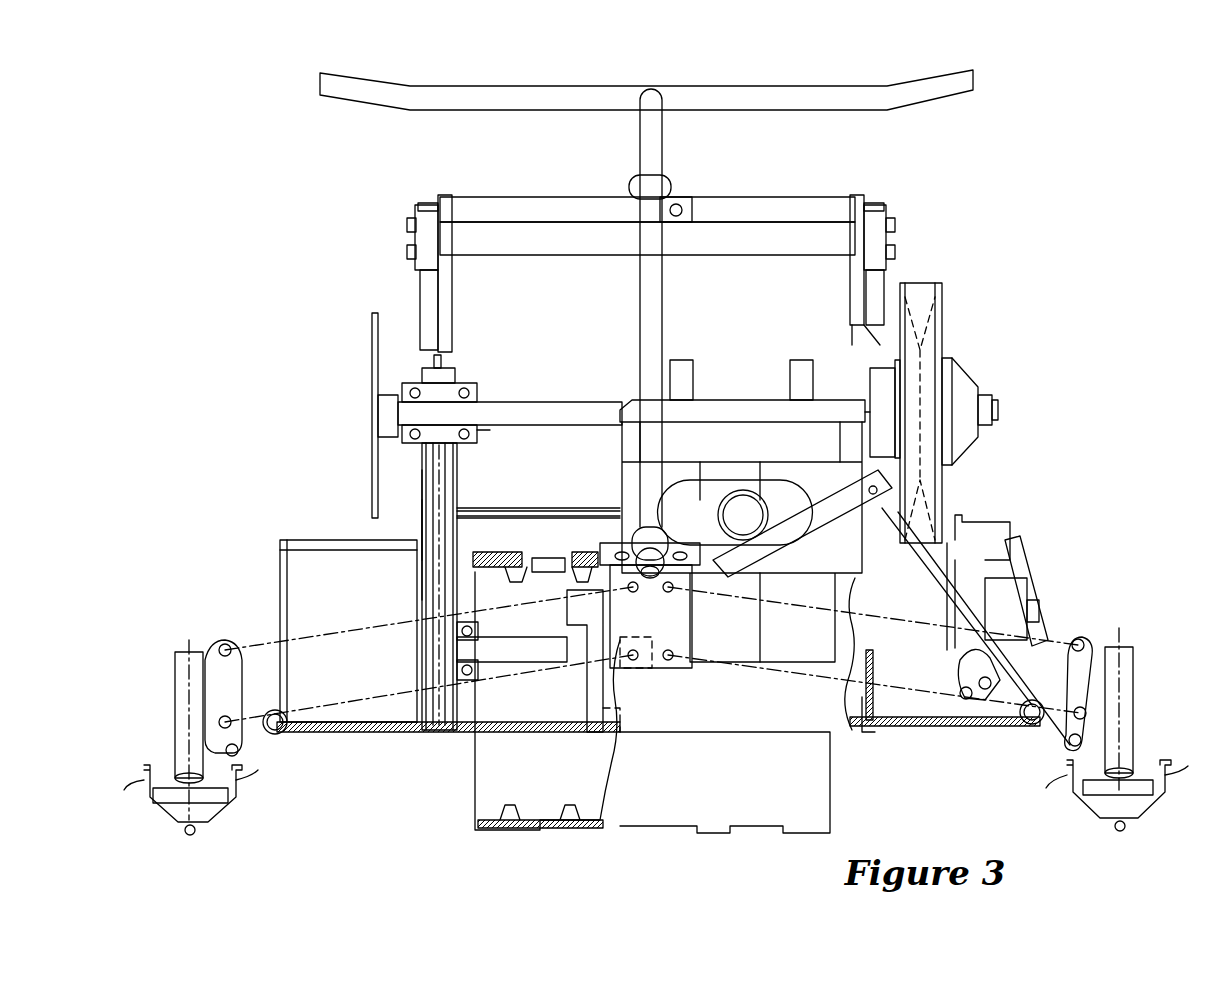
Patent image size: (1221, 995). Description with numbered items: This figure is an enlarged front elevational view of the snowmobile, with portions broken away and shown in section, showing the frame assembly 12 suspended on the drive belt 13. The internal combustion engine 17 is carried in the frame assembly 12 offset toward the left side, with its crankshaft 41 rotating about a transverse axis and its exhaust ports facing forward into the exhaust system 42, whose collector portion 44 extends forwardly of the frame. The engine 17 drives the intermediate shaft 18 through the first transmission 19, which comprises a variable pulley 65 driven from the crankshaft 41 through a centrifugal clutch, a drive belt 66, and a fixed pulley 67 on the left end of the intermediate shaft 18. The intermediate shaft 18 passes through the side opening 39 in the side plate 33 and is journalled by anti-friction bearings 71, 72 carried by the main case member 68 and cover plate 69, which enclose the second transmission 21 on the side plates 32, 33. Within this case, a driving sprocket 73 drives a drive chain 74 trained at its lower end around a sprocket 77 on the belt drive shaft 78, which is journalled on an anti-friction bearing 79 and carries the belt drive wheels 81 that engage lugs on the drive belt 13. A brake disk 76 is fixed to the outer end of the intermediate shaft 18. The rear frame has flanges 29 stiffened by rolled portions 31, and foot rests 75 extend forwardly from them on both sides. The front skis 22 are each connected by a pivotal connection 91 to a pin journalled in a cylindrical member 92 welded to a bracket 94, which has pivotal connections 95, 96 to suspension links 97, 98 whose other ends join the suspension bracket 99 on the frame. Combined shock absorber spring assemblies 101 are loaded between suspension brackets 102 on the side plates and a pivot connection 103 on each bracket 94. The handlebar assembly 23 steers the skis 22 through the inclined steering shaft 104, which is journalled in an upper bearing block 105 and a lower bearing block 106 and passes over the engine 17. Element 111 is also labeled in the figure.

The frame assembly 12 is at (883, 191).
The drive belt 13 is at (472, 832).
The internal combustion engine 17 is at (724, 374).
The intermediate shaft 18 is at (553, 402).
The first transmission 19 is at (983, 471).
The second transmission 21 is at (411, 528).
The front skis 22 is at (117, 797).
The handlebar assembly 23 is at (730, 77).
The flanges 29 is at (330, 732).
The rolled portions 31 is at (275, 730).
The side plate 32 is at (853, 315).
The side plate 33 is at (441, 360).
The side opening 39 is at (405, 385).
The crankshaft 41 is at (860, 605).
The exhaust system 42 is at (751, 482).
The collector portion 44 is at (790, 505).
The variable pulley 65 is at (950, 540).
The drive belt 66 is at (915, 290).
The fixed pulley 67 is at (948, 352).
The main case member 68 is at (457, 462).
The cover plate 69 is at (422, 492).
The anti-friction bearing 71 is at (478, 434).
The anti-friction bearing 72 is at (405, 440).
The driving sprocket 73 is at (455, 375).
The drive chain 74 is at (447, 505).
The foot rests 75 is at (290, 540).
The brake disk 76 is at (372, 344).
The sprocket 77 is at (457, 625).
The belt drive shaft 78 is at (465, 660).
The anti-friction bearing 79 is at (478, 628).
The belt drive wheels 81 is at (580, 716).
The pivotal connection 91 is at (160, 788).
The cylindrical member 92 is at (175, 688).
The bracket 94 is at (230, 690).
The pivotal connection 95 is at (222, 640).
The pivotal connection 96 is at (1105, 678).
The suspension link 97 is at (312, 640).
The suspension link 98 is at (305, 700).
The suspension bracket 99 is at (668, 660).
The combined shock absorber spring assemblies 101 is at (990, 580).
The suspension brackets 102 is at (860, 470).
The pivot connection 103 is at (240, 760).
The steering shaft 104 is at (654, 136).
The bearing block 105 is at (660, 184).
The lower bearing block 106 is at (640, 530).
The bracket 111 is at (415, 278).